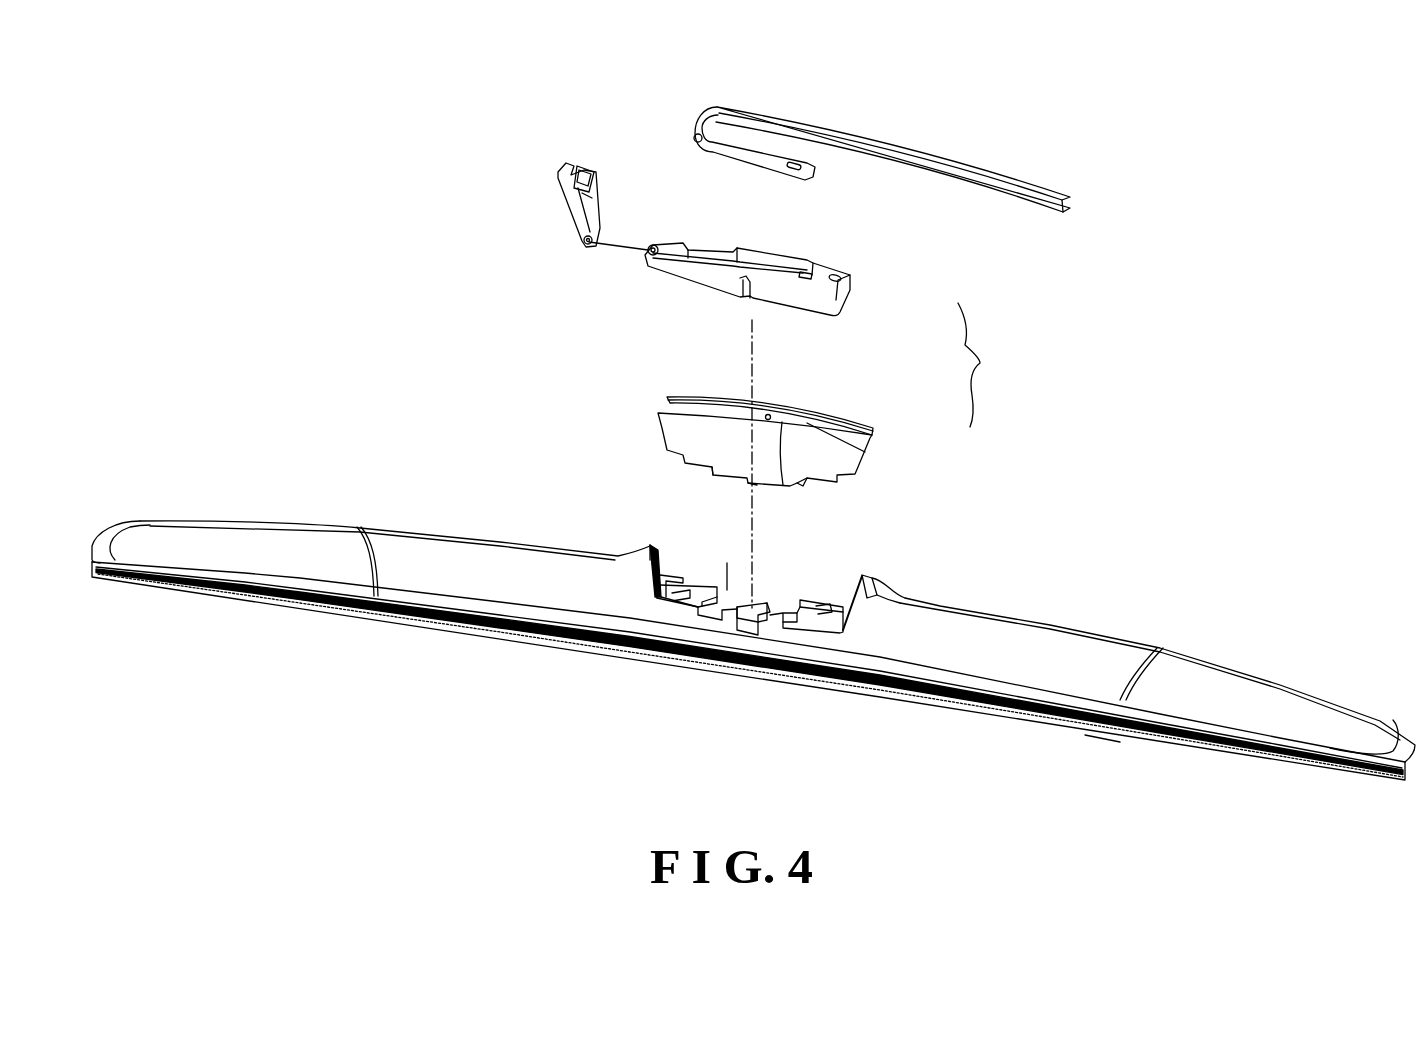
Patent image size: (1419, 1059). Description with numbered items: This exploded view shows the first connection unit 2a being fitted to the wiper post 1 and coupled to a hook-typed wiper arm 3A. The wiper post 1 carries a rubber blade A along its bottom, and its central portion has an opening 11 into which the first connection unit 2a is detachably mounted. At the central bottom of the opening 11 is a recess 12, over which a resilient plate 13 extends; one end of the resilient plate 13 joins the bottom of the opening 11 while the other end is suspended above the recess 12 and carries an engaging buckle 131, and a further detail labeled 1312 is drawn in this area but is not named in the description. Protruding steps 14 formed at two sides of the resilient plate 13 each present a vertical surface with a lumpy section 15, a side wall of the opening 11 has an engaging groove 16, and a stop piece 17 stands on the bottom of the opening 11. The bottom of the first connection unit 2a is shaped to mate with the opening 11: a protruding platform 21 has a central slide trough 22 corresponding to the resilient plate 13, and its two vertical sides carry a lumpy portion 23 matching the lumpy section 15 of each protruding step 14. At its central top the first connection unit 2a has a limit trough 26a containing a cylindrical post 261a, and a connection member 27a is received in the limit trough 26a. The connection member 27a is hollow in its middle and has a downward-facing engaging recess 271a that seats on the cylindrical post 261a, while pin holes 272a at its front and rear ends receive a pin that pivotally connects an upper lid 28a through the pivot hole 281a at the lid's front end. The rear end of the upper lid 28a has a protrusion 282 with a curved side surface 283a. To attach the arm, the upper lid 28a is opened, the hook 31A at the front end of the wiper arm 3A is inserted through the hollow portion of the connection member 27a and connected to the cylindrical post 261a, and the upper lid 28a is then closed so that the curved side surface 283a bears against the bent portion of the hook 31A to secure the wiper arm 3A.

The wiper post 1 is at (753, 651).
The opening 11 is at (818, 590).
The recess 12 is at (757, 630).
The resilient plate 13 is at (738, 628).
The engaging buckle 131 is at (727, 620).
The protrusion 1312 is at (745, 630).
The protruding steps 14 is at (683, 597).
The lumpy section 15 is at (727, 563).
The engaging groove 16 is at (655, 547).
The stop piece 17 is at (662, 562).
The first connection unit 2a is at (745, 302).
The protruding platform 21 is at (817, 413).
The slide trough 22 is at (757, 485).
The lumpy portion 23 is at (712, 467).
The limit trough 26a is at (818, 410).
The cylindrical post 261a is at (770, 418).
The connection member 27a is at (832, 303).
The engaging recess 271a is at (752, 320).
The pin hole 272a is at (653, 246).
The upper lid 28a is at (577, 217).
The pivot hole 281a is at (583, 240).
The protrusion 282 is at (597, 163).
The curved side surface 283a is at (575, 163).
The hook-typed wiper arm 3A is at (882, 119).
The hook 31A is at (757, 157).
The rubber blade A is at (1108, 730).